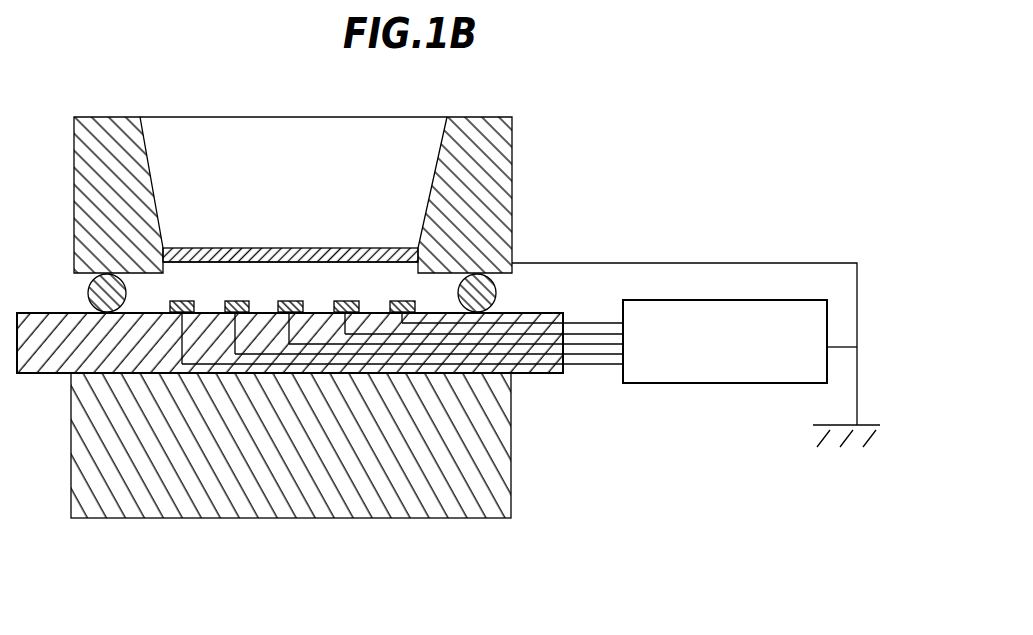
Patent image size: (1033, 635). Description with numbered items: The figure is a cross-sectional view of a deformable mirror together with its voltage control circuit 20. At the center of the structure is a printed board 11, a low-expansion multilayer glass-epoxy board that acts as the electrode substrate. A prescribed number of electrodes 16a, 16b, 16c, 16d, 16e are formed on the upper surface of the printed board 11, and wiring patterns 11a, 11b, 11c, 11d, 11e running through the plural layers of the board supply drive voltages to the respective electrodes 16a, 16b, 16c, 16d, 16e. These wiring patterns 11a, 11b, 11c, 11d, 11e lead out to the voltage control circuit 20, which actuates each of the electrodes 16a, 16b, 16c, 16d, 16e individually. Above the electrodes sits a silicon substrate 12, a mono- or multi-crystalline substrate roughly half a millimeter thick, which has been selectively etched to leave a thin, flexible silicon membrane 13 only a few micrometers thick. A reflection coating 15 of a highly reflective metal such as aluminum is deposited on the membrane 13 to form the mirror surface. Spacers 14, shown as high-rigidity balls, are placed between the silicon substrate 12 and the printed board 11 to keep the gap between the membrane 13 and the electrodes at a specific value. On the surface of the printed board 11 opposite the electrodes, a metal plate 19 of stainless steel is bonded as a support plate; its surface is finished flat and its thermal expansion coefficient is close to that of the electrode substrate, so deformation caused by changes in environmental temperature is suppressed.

The printed board 11 is at (58, 355).
The wiring pattern 11a is at (523, 374).
The wiring pattern 11b is at (548, 374).
The wiring pattern 11c is at (583, 346).
The wiring pattern 11d is at (600, 336).
The wiring pattern 11e is at (611, 323).
The silicon substrate 12 is at (498, 141).
The membrane 13 is at (330, 263).
The spacers 14 is at (496, 292).
The reflection coating 15 is at (258, 250).
The electrode 16a is at (186, 301).
The electrode 16b is at (242, 301).
The electrode 16c is at (287, 290).
The electrode 16d is at (345, 290).
The electrode 16e is at (403, 290).
The metal plate 19 is at (161, 503).
The voltage control circuit 20 is at (739, 385).